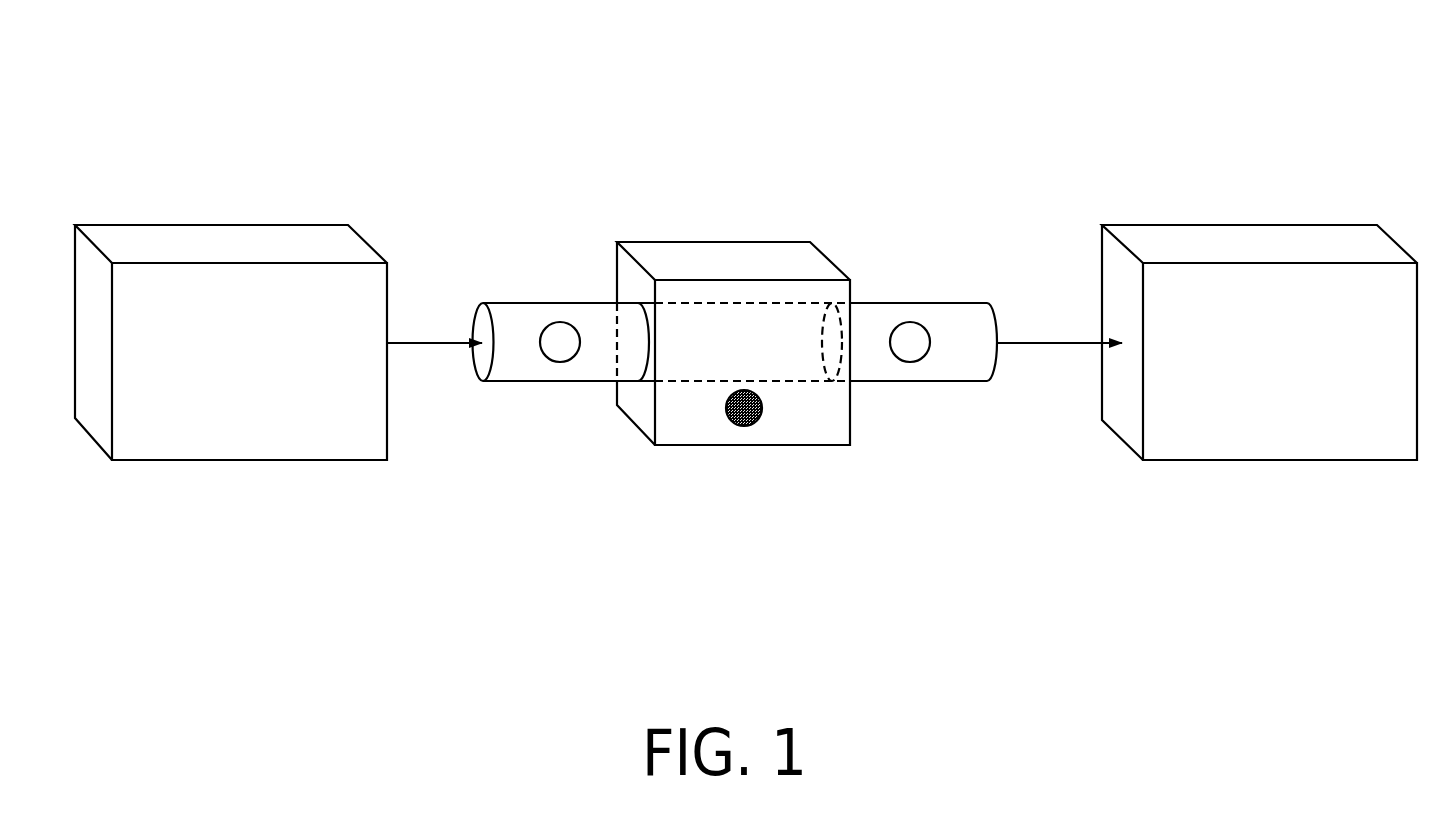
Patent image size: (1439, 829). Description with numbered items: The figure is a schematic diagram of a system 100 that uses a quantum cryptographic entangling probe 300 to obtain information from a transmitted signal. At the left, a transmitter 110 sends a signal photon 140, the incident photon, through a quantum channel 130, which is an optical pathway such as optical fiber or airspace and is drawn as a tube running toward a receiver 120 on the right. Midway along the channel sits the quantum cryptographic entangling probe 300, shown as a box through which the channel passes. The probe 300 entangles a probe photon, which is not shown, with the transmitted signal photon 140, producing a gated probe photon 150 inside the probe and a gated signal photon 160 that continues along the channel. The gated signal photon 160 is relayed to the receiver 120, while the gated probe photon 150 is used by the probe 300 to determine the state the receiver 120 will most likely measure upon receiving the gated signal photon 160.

The system 100 is at (637, 105).
The transmitter 110 is at (213, 465).
The receiver 120 is at (1320, 462).
The quantum channel 130 is at (523, 387).
The signal photon 140 is at (560, 365).
The gated probe photon 150 is at (745, 432).
The gated signal photon 160 is at (910, 367).
The quantum cryptographic entangling probe 300 is at (737, 238).